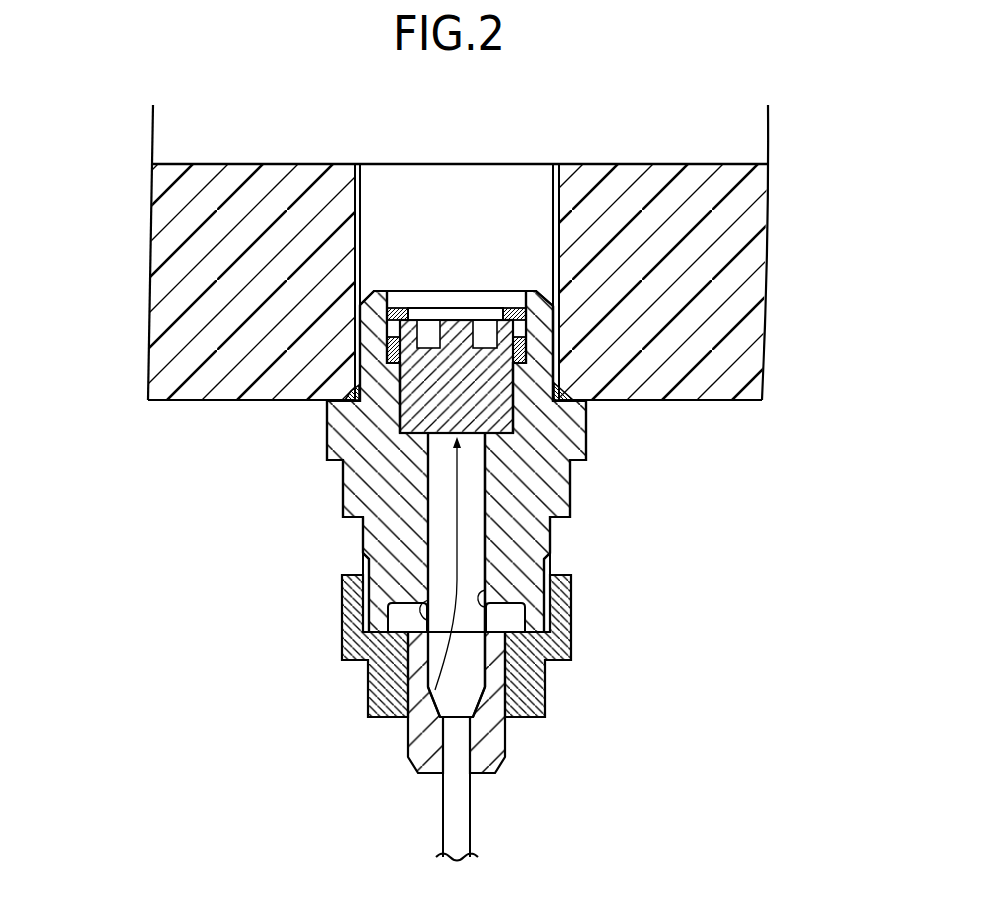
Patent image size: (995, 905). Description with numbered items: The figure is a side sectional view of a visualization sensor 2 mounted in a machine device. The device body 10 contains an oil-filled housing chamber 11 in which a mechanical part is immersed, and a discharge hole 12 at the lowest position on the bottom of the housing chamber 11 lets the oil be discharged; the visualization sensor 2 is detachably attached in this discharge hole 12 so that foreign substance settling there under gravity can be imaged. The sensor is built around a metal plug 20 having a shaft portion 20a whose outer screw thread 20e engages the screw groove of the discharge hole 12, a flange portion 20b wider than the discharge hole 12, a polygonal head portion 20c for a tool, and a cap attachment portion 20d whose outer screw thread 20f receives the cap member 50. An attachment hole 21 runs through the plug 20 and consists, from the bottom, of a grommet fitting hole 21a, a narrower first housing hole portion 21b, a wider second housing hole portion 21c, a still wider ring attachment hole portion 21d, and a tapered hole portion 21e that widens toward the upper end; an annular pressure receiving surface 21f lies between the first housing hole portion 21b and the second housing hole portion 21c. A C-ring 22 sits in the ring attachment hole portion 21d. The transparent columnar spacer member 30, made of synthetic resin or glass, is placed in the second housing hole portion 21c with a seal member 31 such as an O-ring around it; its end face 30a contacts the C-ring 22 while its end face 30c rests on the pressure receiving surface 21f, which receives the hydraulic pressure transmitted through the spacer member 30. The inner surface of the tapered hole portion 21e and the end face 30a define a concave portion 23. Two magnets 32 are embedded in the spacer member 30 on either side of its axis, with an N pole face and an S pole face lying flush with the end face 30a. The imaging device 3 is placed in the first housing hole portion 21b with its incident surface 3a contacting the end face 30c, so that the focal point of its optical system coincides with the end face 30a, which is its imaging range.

The visualization sensor 2 is at (598, 436).
The imaging device 3 is at (473, 487).
The incident surface 3a is at (458, 423).
The device body 10 is at (748, 258).
The housing chamber 11 is at (745, 150).
The discharge hole 12 is at (553, 176).
The plug 20 is at (175, 428).
The shaft portion 20a is at (359, 347).
The flange portion 20b is at (327, 450).
The head portion 20c is at (350, 480).
The cap attachment portion 20d is at (369, 536).
The screw thread 20e is at (359, 322).
The screw thread 20f is at (367, 562).
The attachment hole 21 is at (672, 503).
The grommet fitting hole 21a is at (520, 650).
The first housing hole portion 21b is at (524, 608).
The second housing hole portion 21c is at (462, 442).
The ring attachment hole portion 21d is at (513, 397).
The tapered hole portion 21e is at (538, 289).
The pressure receiving surface 21f is at (426, 622).
The C-ring 22 is at (403, 308).
The concave portion 23 is at (465, 296).
The spacer member 30 is at (417, 401).
The end face 30a is at (448, 300).
The end face 30c is at (419, 425).
The seal member 31 is at (375, 292).
The magnets 32 is at (425, 308).
The cap member 50 is at (545, 702).